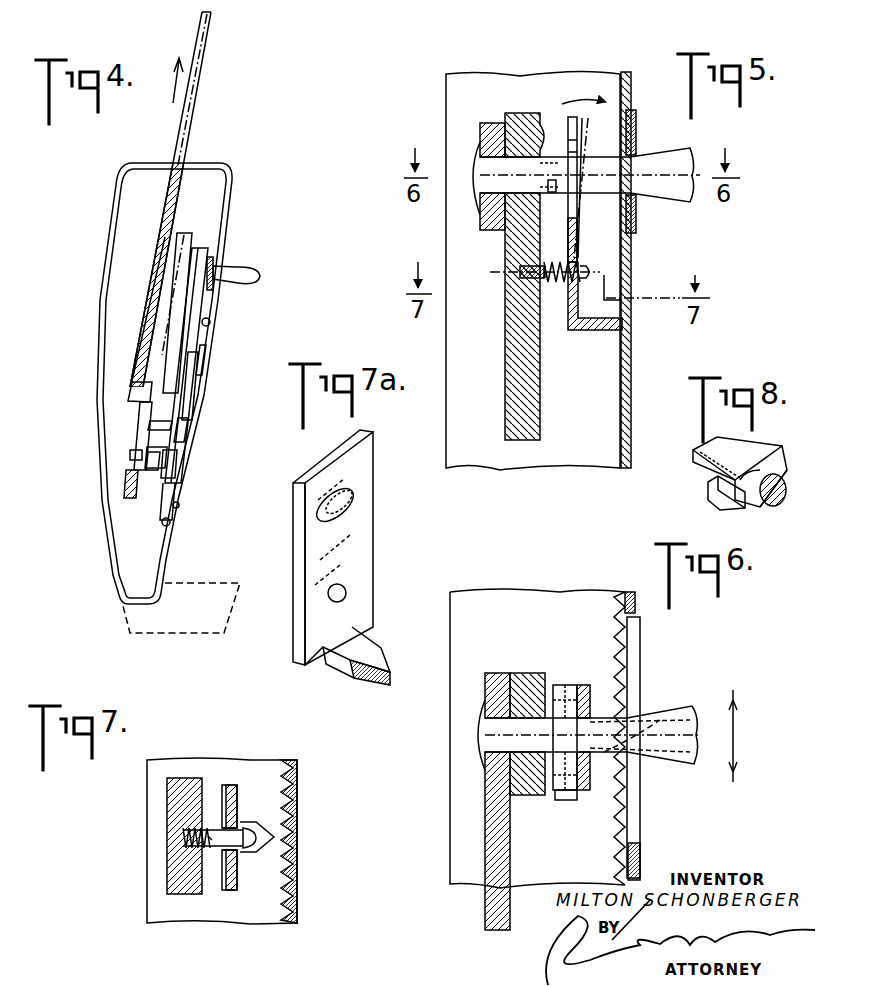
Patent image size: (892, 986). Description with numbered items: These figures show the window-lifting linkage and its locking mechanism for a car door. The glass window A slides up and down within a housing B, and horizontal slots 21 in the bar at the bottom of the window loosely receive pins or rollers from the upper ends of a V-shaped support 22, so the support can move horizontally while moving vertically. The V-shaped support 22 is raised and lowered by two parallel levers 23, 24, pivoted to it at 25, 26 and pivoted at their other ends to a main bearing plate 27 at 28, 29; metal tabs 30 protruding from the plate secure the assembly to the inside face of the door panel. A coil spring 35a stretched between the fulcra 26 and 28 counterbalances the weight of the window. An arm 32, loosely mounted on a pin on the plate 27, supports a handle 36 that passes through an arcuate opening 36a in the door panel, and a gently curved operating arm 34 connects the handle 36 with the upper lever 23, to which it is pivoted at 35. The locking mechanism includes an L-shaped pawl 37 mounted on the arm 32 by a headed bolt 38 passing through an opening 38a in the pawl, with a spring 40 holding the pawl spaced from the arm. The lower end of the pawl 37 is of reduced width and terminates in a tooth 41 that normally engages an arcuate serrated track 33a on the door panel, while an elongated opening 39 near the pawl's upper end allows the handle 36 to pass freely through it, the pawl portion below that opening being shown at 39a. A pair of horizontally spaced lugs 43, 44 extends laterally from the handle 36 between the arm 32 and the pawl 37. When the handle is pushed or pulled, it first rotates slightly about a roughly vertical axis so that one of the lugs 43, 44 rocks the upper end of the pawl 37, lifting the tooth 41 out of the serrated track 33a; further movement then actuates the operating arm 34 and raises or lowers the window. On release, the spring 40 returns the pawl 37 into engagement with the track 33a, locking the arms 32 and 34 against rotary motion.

In FIG. 4, the glass window A is at (203, 68).
In FIG. 4, the casing B is at (118, 210).
In FIG. 5, the casing B is at (466, 84).
In FIG. 4, the horizontal slots 21 is at (134, 396).
In FIG. 4, the V-shaped support 22 is at (142, 434).
In FIG. 4, the upper parallel lever 23 is at (170, 452).
In FIG. 4, the lower parallel lever 24 is at (154, 465).
In FIG. 4, the pivot 25 is at (132, 450).
In FIG. 4, the pivot 26 is at (128, 478).
In FIG. 4, the main bearing plate 27 is at (195, 382).
In FIG. 4, the pivot 28 is at (170, 428).
In FIG. 4, the pivot 29 is at (174, 474).
In FIG. 4, the metal tabs 30 is at (210, 322).
In FIG. 4, the arm 32 is at (208, 250).
In FIG. 5, the arm 32 is at (520, 116).
In FIG. 6, the arm 32 is at (525, 674).
In FIG. 7, the arm 32 is at (180, 798).
In FIG. 5, the arcuate serrated track 33a is at (624, 296).
In FIG. 6, the arcuate serrated track 33a is at (630, 843).
In FIG. 4, the operating arm 34 is at (193, 250).
In FIG. 5, the operating arm 34 is at (486, 124).
In FIG. 6, the operating arm 34 is at (496, 674).
In FIG. 4, the pivot 35 is at (186, 418).
In FIG. 4, the coil spring 35a is at (208, 350).
In FIG. 4, the handle 36 is at (254, 270).
In FIG. 5, the handle 36 is at (668, 160).
In FIG. 8, the handle 36 is at (782, 494).
In FIG. 6, the handle 36 is at (692, 715).
In FIG. 5, the arcuate opening 36a is at (634, 193).
In FIG. 4, the L-shaped pawl 37 is at (220, 262).
In FIG. 5, the L-shaped pawl 37 is at (576, 122).
In FIG. 7A, the L-shaped pawl 37 is at (352, 546).
In FIG. 6, the L-shaped pawl 37 is at (594, 692).
In FIG. 7, the L-shaped pawl 37 is at (229, 783).
In FIG. 5, the headed bolt 38 is at (530, 266).
In FIG. 7, the headed bolt 38 is at (190, 838).
In FIG. 7A, the opening 38a is at (346, 590).
In FIG. 7, the opening 38a is at (230, 822).
In FIG. 5, the elongated opening 39 is at (572, 146).
In FIG. 7A, the elongated opening 39 is at (350, 495).
In FIG. 5, the slot lower portion 39a is at (580, 258).
In FIG. 5, the spring 40 is at (548, 280).
In FIG. 7, the spring 40 is at (218, 826).
In FIG. 5, the tooth 41 is at (612, 335).
In FIG. 7A, the tooth 41 is at (384, 656).
In FIG. 6, the tooth 41 is at (604, 722).
In FIG. 7, the tooth 41 is at (270, 850).
In FIG. 8, the lug 43 is at (772, 456).
In FIG. 6, the lug 43 is at (566, 690).
In FIG. 5, the lug 44 is at (570, 208).
In FIG. 8, the lug 44 is at (708, 496).
In FIG. 6, the lug 44 is at (568, 800).